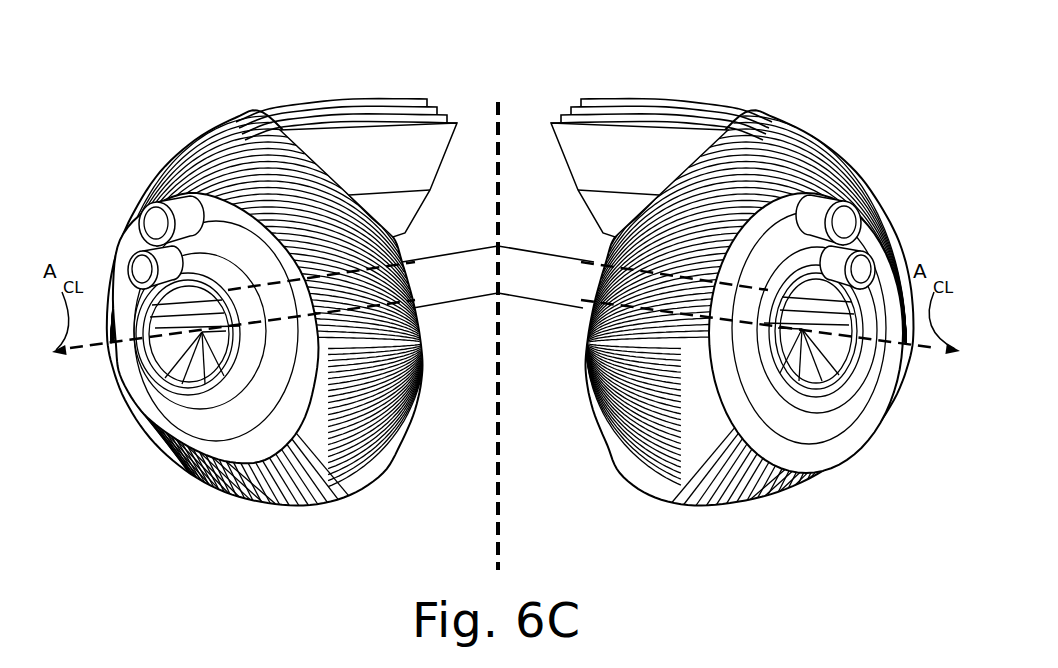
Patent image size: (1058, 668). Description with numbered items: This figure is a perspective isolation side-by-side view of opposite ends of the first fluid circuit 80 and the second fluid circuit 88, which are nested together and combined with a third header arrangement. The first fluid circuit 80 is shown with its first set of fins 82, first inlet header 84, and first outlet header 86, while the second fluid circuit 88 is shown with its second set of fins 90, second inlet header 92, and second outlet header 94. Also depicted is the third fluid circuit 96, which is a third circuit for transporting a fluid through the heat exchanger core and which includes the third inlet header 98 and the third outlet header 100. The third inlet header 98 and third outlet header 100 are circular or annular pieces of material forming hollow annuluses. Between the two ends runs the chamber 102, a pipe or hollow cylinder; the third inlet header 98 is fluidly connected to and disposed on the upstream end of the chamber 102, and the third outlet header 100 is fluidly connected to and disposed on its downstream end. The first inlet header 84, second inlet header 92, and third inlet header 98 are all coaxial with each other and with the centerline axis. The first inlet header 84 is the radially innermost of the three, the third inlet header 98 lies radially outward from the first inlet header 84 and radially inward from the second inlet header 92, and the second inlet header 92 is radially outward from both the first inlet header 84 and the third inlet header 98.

The first fluid circuit 80 is at (324, 95).
The first set of fins 82 is at (393, 97).
The first inlet header 84 is at (113, 273).
The first outlet header 86 is at (893, 280).
The second fluid circuit 88 is at (386, 477).
The second set of fins 90 is at (404, 400).
The second inlet header 92 is at (128, 400).
The second outlet header 94 is at (788, 448).
The third fluid circuit 96 is at (781, 218).
The third inlet header 98 is at (213, 217).
The third outlet header 100 is at (787, 407).
The chamber 102 is at (450, 302).